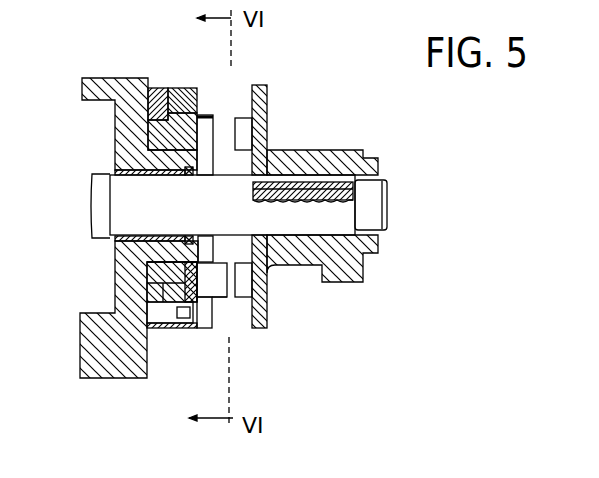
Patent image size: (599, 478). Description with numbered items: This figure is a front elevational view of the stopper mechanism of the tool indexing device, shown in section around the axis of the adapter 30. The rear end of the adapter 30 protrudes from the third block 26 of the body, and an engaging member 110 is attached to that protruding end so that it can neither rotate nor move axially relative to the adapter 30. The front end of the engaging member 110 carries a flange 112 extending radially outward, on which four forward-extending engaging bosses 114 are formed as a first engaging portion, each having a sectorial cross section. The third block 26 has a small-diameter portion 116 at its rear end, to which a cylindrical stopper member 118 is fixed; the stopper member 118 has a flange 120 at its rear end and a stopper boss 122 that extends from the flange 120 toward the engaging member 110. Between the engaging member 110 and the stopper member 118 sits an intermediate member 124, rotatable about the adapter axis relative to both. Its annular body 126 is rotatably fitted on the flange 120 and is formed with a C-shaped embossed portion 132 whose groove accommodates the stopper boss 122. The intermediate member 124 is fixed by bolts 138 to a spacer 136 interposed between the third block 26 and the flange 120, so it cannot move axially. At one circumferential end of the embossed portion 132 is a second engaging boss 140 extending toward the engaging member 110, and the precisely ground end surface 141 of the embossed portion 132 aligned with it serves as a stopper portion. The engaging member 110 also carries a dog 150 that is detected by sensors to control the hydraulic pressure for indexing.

The third block 26 is at (98, 360).
The adapter 30 is at (345, 213).
The engaging member 110 is at (335, 155).
The flange 112 is at (262, 97).
The engaging bosses 114 is at (240, 117).
The small-diameter portion 116 is at (165, 250).
The stopper member 118 is at (160, 132).
The flange 120 is at (177, 293).
The stopper boss 122 is at (203, 112).
The intermediate member 124 is at (118, 81).
The annular body 126 is at (170, 87).
The embossed portion 132 is at (203, 178).
The spacer 136 is at (155, 328).
The bolts 138 is at (203, 323).
The second engaging boss 140 is at (218, 292).
The end surface 141 is at (202, 268).
The dog 150 is at (343, 263).